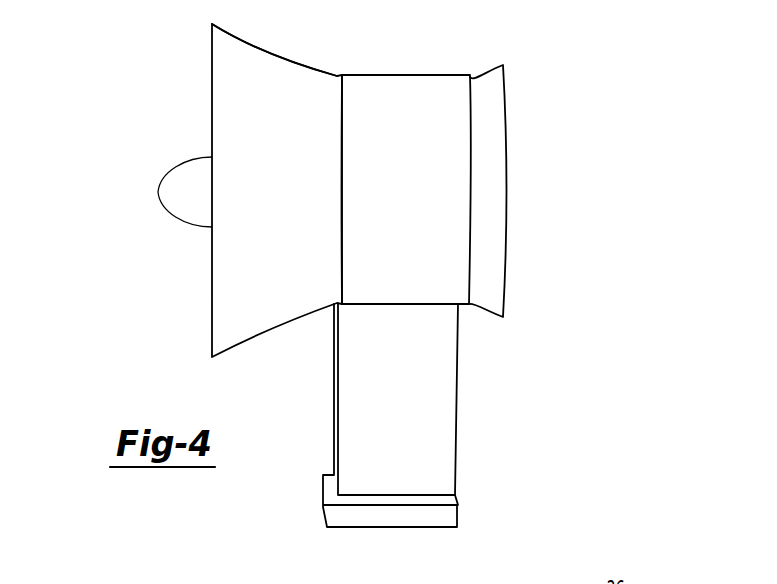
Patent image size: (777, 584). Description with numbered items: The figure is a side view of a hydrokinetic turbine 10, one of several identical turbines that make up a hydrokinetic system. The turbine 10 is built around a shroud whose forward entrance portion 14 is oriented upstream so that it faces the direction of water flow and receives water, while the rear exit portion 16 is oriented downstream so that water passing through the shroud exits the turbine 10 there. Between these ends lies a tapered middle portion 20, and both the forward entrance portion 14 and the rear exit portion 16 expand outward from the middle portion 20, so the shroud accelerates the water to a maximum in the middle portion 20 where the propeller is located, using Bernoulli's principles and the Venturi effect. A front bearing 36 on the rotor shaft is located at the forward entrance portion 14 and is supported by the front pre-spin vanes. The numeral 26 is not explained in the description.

The hydrokinetic turbine 10 is at (353, 266).
The forward entrance portion 14 is at (200, 190).
The rear exit portion 16 is at (526, 175).
The middle portion 20 is at (409, 76).
The horn rim / flared edge 26 is at (225, 77).
The front bearing 36 is at (170, 191).